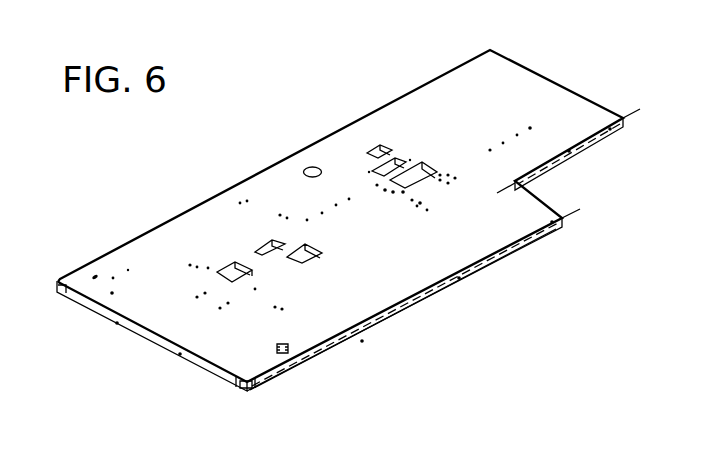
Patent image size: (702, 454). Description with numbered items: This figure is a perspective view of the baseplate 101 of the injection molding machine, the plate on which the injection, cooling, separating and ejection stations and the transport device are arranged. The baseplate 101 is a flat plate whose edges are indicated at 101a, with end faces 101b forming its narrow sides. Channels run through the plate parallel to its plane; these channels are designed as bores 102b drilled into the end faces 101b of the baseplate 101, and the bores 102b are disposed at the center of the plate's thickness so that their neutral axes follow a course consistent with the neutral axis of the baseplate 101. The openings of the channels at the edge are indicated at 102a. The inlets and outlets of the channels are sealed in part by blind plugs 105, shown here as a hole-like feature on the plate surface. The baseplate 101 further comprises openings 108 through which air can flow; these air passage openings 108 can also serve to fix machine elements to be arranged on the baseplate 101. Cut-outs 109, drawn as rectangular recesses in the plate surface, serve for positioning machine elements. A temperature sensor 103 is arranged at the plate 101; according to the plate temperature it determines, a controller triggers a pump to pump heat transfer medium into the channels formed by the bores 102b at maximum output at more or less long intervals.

The baseplate 101 is at (492, 63).
The first edge of the board 101a is at (362, 341).
The end faces 101b is at (142, 340).
The first edge of the heat spreader 102a is at (403, 309).
The bores 102b is at (552, 222).
The temperature sensor 103 is at (421, 203).
The blind plugs 105 is at (280, 212).
The openings 108 is at (530, 128).
The cut-outs 109 is at (379, 144).